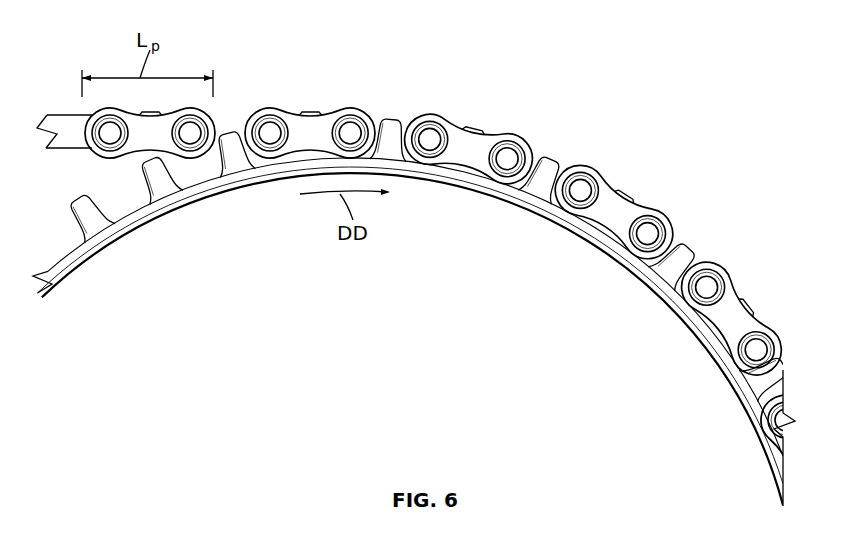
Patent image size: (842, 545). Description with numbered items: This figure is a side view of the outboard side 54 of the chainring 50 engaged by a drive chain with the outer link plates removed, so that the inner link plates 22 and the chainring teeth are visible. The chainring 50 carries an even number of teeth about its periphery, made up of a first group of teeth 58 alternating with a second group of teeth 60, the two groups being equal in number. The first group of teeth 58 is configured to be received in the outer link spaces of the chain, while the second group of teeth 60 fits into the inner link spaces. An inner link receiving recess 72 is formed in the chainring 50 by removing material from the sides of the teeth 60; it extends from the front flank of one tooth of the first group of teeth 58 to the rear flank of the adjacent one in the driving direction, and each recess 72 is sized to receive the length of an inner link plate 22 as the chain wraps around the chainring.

The inner link plate 22 is at (347, 108).
The chainring 50 is at (414, 284).
The outboard side 54 is at (157, 190).
The first group of teeth 58 is at (392, 116).
The second group of teeth 60 is at (468, 126).
The inner link receiving recess 72 is at (458, 175).